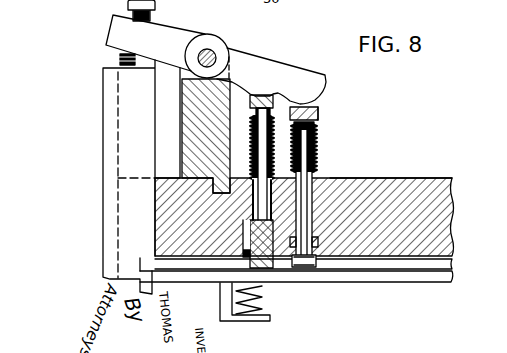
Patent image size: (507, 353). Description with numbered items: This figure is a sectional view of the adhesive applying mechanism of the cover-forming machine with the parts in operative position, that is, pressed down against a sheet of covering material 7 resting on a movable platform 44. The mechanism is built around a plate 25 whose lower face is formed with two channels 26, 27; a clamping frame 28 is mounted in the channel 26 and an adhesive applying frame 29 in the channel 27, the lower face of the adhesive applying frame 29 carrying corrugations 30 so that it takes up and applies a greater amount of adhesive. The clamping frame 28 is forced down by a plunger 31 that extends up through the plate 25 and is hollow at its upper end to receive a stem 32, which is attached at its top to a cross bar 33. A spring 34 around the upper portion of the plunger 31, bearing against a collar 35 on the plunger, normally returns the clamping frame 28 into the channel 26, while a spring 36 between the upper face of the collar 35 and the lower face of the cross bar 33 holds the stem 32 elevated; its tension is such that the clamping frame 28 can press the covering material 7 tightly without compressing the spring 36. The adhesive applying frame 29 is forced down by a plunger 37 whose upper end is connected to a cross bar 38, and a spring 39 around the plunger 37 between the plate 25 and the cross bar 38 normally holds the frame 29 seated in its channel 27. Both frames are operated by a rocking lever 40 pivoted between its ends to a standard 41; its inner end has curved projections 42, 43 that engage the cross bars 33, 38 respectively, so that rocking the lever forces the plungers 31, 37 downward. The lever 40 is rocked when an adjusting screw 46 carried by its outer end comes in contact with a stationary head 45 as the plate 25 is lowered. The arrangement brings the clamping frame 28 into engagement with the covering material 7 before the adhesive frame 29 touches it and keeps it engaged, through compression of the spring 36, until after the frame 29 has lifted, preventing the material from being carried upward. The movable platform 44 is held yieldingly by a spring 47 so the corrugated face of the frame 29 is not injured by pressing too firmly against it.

The covering material 7 is at (447, 271).
The plate 25 is at (449, 192).
The channel 26 is at (320, 262).
The channel 27 is at (245, 253).
The clamping frame 28 is at (306, 263).
The adhesive applying frame 29 is at (243, 246).
The corrugations 30 is at (262, 270).
The plunger 31 is at (358, 181).
The stem 32 is at (317, 154).
The cross bar 33 is at (318, 109).
The spring 34 is at (316, 169).
The collar 35 is at (317, 145).
The spring 36 is at (318, 129).
The plunger 37 is at (262, 165).
The cross bar 38 is at (270, 93).
The spring 39 is at (239, 139).
The rocking lever 40 is at (121, 26).
The standard 41 is at (186, 120).
The curved projection 42 is at (316, 98).
The curved projection 43 is at (253, 95).
The movable platform 44 is at (423, 282).
The stationary head 45 is at (118, 179).
The adjusting screw 46 is at (119, 58).
The spring 47 is at (262, 298).